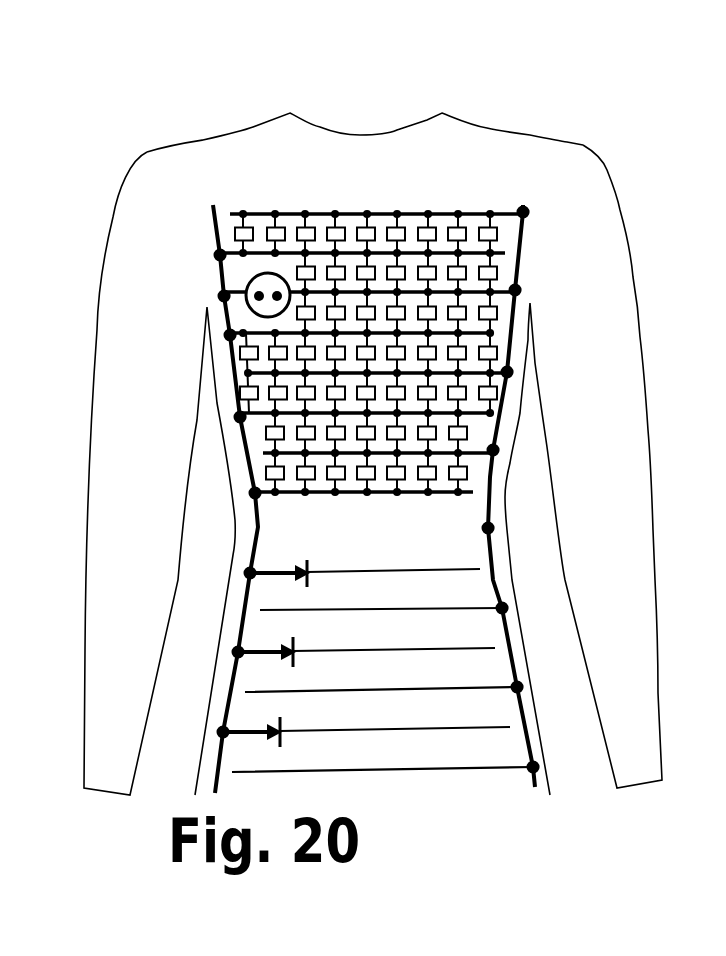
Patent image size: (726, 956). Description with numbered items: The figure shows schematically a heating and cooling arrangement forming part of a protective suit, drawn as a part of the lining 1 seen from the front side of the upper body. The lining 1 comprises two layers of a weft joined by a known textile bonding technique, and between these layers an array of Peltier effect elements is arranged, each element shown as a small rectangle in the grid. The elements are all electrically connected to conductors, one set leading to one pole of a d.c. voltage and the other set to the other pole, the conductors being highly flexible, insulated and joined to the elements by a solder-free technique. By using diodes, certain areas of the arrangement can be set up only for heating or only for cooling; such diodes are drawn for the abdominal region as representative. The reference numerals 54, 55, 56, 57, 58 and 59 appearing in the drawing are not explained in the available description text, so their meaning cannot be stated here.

The lining 1 is at (450, 140).
The upper body portion of garment 54 is at (533, 175).
The sensor elements 55 is at (490, 353).
The left conductive edge line 56 is at (245, 447).
The right conductive edge line 57 is at (493, 475).
The electronic unit 58 is at (258, 293).
The conductive lines with connectors 59 is at (303, 574).